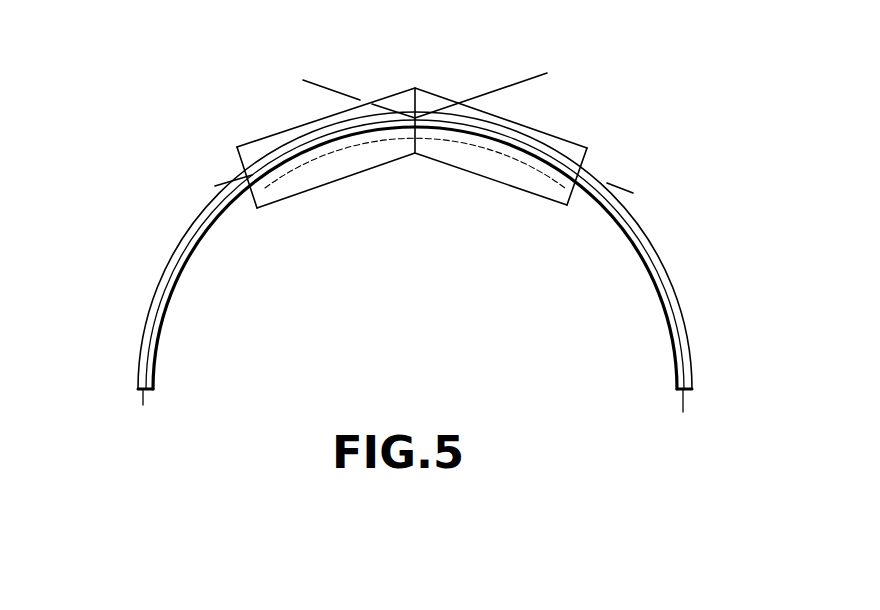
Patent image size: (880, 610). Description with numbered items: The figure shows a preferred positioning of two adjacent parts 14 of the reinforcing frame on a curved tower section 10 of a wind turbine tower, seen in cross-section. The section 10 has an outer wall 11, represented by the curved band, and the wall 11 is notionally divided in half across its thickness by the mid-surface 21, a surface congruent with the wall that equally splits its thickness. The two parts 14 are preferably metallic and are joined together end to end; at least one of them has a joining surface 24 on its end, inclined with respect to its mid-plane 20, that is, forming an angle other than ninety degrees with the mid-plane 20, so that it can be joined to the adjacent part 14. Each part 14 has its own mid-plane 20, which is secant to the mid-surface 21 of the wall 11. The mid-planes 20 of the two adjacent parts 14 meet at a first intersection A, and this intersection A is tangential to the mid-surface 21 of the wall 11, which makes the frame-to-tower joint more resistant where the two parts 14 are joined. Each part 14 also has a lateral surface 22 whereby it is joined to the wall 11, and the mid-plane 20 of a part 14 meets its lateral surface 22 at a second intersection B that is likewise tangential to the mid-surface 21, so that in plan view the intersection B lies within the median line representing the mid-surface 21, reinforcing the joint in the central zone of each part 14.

The section 10 is at (412, 269).
The outer wall 11 is at (148, 305).
The part 14 is at (430, 133).
The mid-plane 20 is at (441, 101).
The mid-surface 21 is at (686, 401).
The lateral surface 22 is at (266, 140).
The joining surface 24 is at (418, 110).
The first intersection A is at (413, 117).
The second intersection B is at (245, 178).